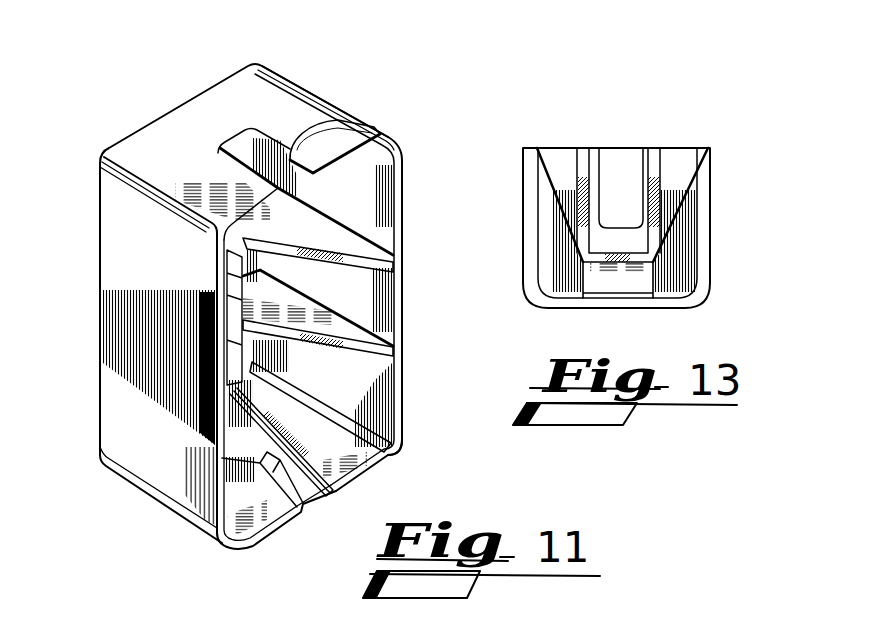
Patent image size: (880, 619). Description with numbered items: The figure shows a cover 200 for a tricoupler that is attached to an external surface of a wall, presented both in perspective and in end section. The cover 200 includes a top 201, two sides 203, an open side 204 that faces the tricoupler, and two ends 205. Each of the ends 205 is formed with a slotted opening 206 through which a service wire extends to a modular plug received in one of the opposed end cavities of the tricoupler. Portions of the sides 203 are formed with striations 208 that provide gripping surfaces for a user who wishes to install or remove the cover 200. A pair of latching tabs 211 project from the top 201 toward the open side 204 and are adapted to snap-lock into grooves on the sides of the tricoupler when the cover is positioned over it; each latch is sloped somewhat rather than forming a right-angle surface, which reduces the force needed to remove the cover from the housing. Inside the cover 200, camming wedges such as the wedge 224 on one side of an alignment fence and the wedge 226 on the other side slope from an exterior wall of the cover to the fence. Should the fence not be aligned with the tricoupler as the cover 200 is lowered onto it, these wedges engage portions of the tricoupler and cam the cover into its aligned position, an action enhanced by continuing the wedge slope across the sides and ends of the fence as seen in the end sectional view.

In FIG. 11, the cover 200 is at (338, 90).
In FIG. 11, the top 201 is at (245, 155).
In FIG. 13, the top 201 is at (669, 308).
In FIG. 11, the sides 203 is at (120, 217).
In FIG. 13, the sides 203 is at (523, 225).
In FIG. 11, the open side 204 is at (378, 382).
In FIG. 13, the open side 204 is at (558, 155).
In FIG. 11, the ends 205 is at (260, 85).
In FIG. 11, the slotted opening 206 is at (293, 150).
In FIG. 11, the striations 208 is at (117, 327).
In FIG. 11, the latching tabs 211 is at (233, 271).
In FIG. 13, the camming wedge 224 is at (549, 231).
In FIG. 13, the camming wedge 226 is at (683, 233).